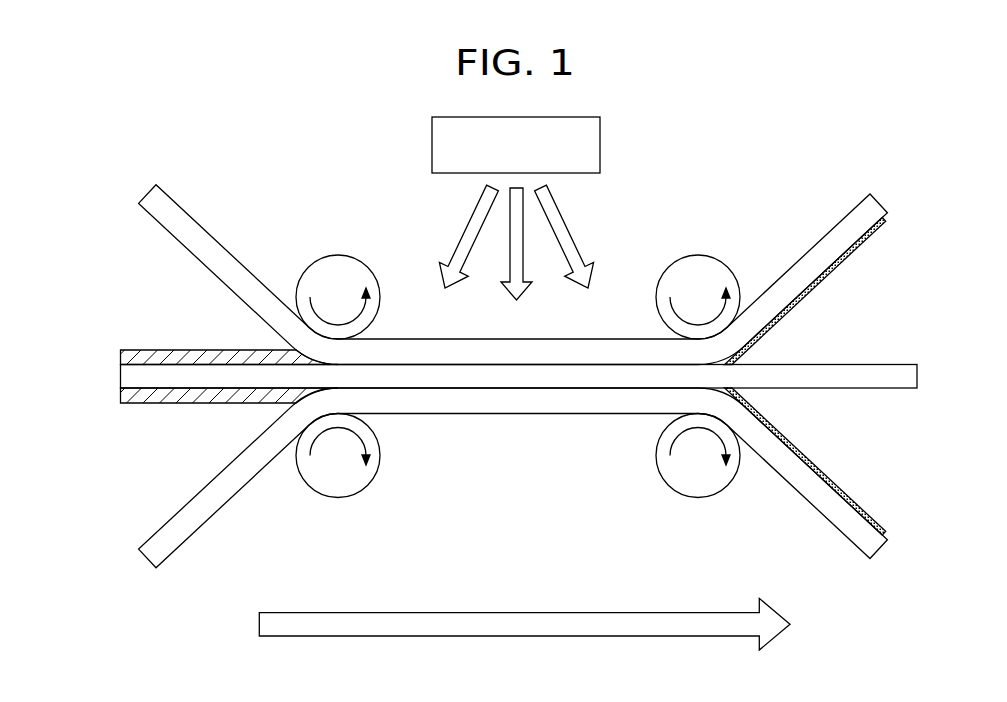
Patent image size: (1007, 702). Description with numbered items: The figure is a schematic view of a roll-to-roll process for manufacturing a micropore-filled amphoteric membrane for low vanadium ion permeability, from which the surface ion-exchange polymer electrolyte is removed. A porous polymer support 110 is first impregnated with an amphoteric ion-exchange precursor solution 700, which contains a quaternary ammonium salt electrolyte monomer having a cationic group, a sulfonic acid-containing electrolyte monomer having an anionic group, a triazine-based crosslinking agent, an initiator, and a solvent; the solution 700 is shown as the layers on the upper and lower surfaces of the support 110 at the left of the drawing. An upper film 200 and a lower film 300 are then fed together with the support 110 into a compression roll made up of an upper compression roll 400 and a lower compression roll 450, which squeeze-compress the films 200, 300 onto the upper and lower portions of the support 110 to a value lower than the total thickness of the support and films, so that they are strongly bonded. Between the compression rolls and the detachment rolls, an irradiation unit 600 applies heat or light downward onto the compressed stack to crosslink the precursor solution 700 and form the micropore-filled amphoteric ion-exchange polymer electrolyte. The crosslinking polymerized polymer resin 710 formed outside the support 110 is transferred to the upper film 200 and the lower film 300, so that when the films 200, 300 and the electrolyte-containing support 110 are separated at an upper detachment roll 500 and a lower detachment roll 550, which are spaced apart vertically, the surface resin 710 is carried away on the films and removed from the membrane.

The porous polymer support 110 is at (128, 376).
The upper film 200 is at (197, 237).
The lower film 300 is at (197, 517).
The upper compression roll 400 is at (337, 256).
The lower compression roll 450 is at (337, 498).
The upper detachment roll 500 is at (697, 256).
The lower detachment roll 550 is at (697, 498).
The light irradiation unit 600 is at (516, 208).
The amphoteric ion-exchange precursor solution 700 is at (155, 357).
The crosslinking polymerized polymer resin 710 is at (848, 257).